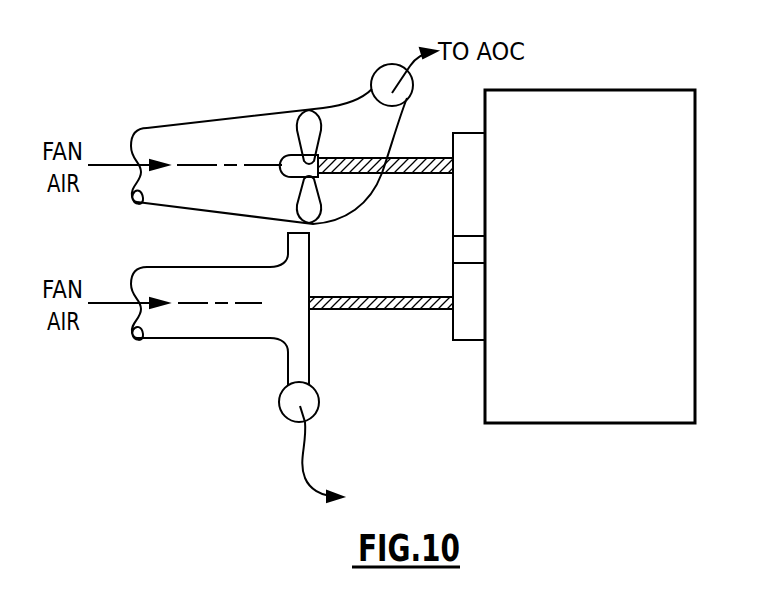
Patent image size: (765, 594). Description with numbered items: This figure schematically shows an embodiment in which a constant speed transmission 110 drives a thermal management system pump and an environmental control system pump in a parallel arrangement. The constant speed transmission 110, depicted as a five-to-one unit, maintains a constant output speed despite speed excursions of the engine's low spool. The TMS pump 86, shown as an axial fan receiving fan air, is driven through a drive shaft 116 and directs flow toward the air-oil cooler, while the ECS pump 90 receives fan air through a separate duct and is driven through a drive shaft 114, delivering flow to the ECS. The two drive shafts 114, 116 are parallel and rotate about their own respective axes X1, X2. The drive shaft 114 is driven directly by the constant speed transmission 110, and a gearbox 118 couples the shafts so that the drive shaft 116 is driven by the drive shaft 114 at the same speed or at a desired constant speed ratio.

The TMS pump 86 is at (308, 120).
The ECS pump 90 is at (301, 363).
The constant speed transmission 110 is at (616, 357).
The drive shaft 114 is at (390, 309).
The drive shaft 116 is at (420, 174).
The gearbox 118 is at (468, 340).
The axis X1 is at (197, 302).
The axis X2 is at (205, 165).